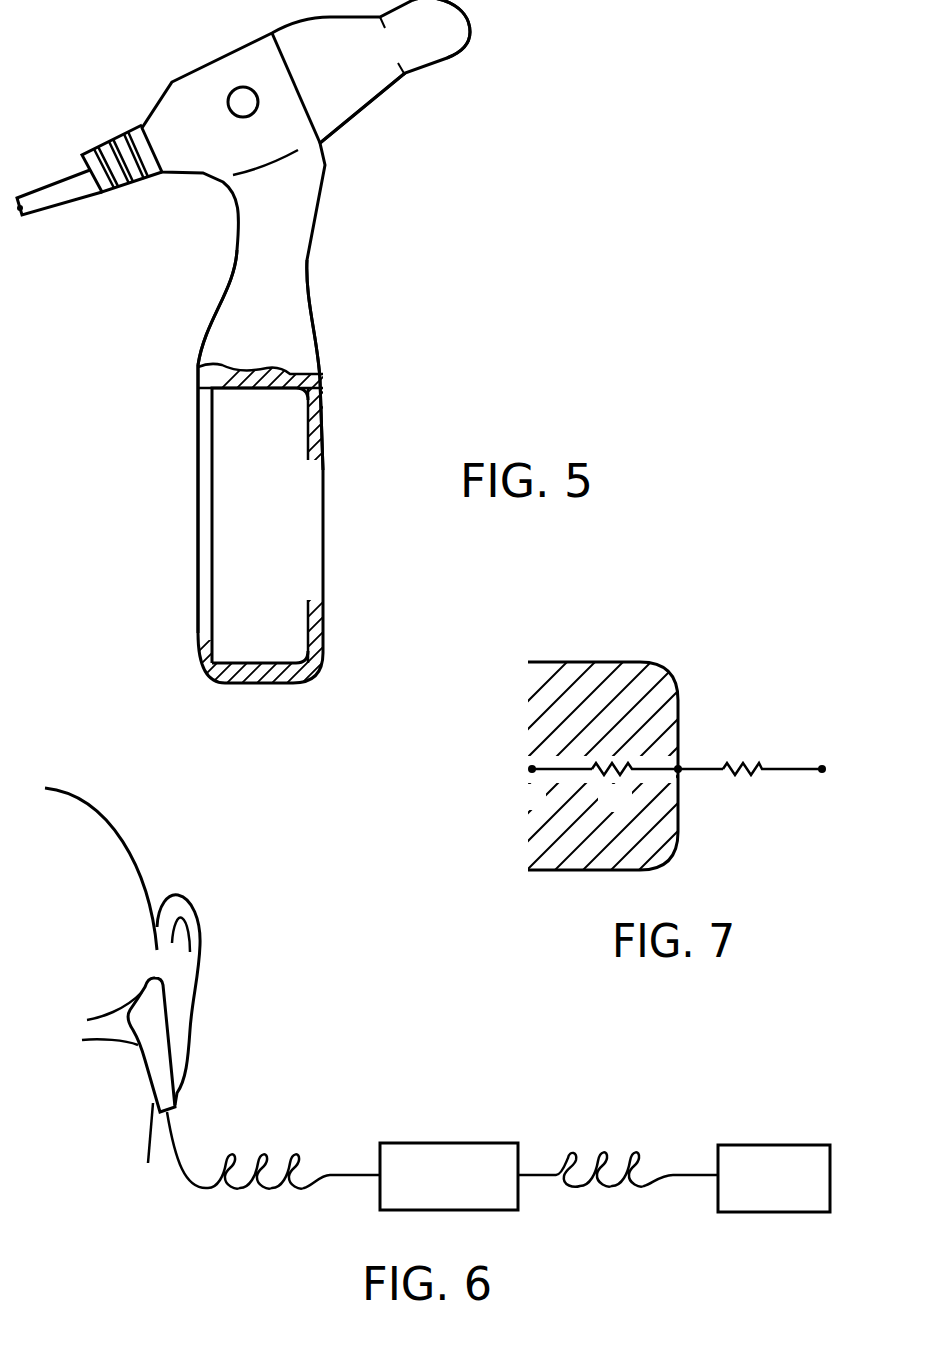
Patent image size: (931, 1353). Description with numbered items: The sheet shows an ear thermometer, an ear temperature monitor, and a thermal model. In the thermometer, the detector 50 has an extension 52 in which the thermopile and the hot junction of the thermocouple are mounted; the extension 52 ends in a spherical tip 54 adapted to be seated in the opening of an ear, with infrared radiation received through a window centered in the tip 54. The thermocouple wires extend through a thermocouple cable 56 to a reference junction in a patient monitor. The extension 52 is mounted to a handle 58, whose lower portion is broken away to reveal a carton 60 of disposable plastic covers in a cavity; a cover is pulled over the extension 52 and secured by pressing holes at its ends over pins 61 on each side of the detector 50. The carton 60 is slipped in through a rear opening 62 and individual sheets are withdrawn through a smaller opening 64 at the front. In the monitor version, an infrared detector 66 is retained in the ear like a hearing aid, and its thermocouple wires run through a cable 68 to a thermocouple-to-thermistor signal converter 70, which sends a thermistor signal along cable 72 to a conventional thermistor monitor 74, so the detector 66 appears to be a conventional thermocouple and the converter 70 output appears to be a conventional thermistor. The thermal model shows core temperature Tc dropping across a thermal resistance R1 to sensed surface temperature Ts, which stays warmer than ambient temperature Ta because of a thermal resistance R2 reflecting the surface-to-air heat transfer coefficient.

In FIG. 5, the detector 50 is at (140, 433).
In FIG. 5, the extension 52 is at (373, 108).
In FIG. 5, the spherical tip 54 is at (470, 43).
In FIG. 5, the thermocouple cable 56 is at (53, 193).
In FIG. 5, the handle 58 is at (320, 350).
In FIG. 5, the carton 60 is at (220, 568).
In FIG. 5, the pins 61 is at (243, 86).
In FIG. 5, the rear opening 62 is at (192, 526).
In FIG. 5, the smaller opening 64 is at (341, 467).
In FIG. 6, the infrared detector 66 is at (173, 1055).
In FIG. 6, the cable 68 is at (260, 1158).
In FIG. 6, the thermocouple-to-thermistor signal converter 70 is at (472, 1143).
In FIG. 6, the cable 72 is at (567, 1160).
In FIG. 6, the thermistor monitor 74 is at (753, 1145).
In FIG. 7, the core temperature Tc is at (554, 788).
In FIG. 7, the thermal resistance R1 is at (657, 787).
In FIG. 7, the sensed temperature Ts is at (665, 781).
In FIG. 7, the thermal resistance R2 is at (772, 787).
In FIG. 7, the ambient temperature Ta is at (829, 788).